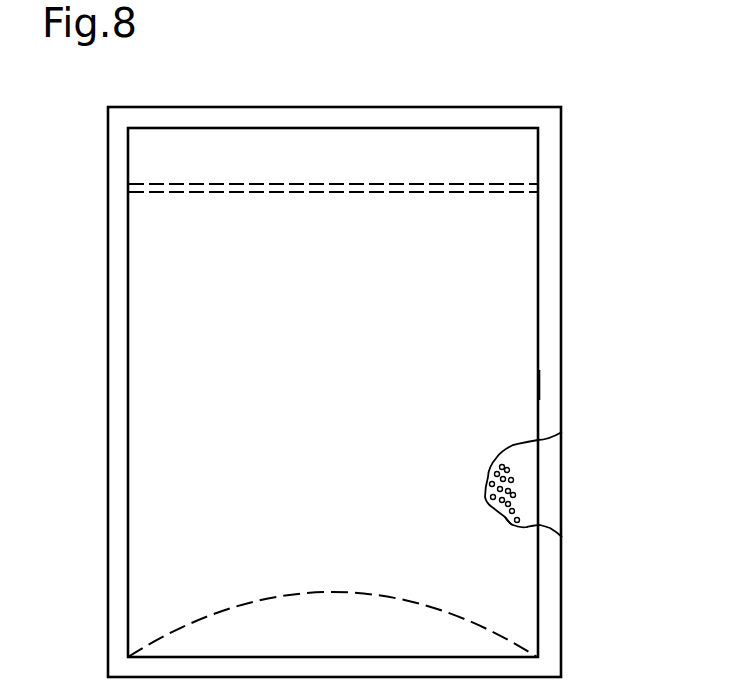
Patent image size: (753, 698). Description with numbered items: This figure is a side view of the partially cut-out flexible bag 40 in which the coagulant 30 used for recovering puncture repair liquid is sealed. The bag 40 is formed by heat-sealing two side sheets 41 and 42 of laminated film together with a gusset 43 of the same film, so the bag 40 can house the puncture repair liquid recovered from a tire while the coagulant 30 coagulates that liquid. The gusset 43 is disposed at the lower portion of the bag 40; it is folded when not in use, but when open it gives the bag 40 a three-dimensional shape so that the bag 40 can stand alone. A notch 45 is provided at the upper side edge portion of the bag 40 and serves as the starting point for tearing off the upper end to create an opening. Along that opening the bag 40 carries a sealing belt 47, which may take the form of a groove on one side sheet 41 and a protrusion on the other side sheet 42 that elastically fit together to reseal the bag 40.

The bag 40 is at (563, 295).
The notch 45 is at (551, 160).
The sealing belt 47 is at (448, 186).
The side sheet 41 is at (510, 387).
The side sheet 42 is at (525, 472).
The coagulant 30 is at (514, 511).
The gusset 43 is at (470, 627).